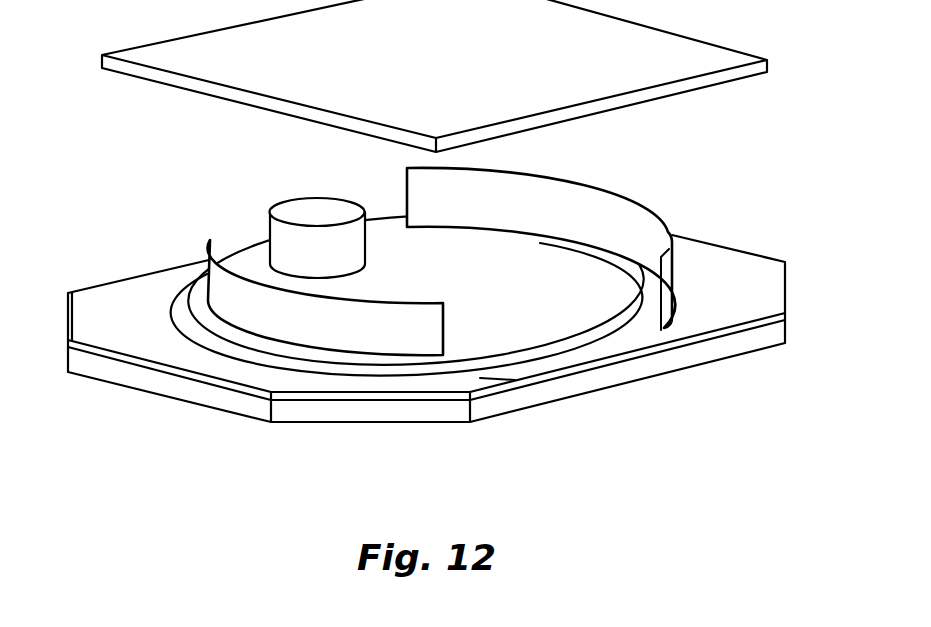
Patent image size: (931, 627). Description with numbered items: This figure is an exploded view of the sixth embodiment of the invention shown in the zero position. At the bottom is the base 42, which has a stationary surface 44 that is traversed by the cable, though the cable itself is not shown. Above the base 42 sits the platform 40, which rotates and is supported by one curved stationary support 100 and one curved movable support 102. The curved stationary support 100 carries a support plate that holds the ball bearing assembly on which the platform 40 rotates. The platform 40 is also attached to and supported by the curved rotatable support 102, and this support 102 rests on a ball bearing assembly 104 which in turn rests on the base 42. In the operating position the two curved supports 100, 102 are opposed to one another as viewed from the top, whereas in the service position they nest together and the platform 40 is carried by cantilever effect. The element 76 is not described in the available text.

The platform 40 is at (702, 57).
The base 42 is at (687, 355).
The stationary surface 44 is at (500, 342).
The cylindrical post 76 is at (295, 250).
The curved stationary support 100 is at (225, 293).
The curved movable support 102 is at (597, 215).
The ball bearing assembly 104 is at (243, 345).